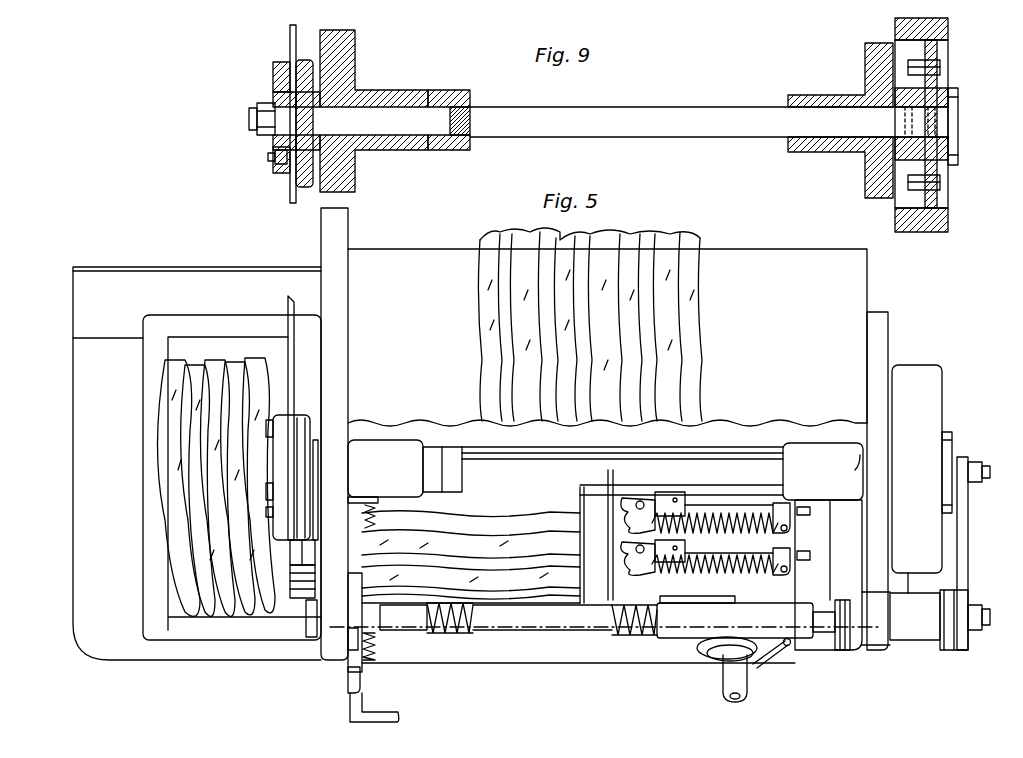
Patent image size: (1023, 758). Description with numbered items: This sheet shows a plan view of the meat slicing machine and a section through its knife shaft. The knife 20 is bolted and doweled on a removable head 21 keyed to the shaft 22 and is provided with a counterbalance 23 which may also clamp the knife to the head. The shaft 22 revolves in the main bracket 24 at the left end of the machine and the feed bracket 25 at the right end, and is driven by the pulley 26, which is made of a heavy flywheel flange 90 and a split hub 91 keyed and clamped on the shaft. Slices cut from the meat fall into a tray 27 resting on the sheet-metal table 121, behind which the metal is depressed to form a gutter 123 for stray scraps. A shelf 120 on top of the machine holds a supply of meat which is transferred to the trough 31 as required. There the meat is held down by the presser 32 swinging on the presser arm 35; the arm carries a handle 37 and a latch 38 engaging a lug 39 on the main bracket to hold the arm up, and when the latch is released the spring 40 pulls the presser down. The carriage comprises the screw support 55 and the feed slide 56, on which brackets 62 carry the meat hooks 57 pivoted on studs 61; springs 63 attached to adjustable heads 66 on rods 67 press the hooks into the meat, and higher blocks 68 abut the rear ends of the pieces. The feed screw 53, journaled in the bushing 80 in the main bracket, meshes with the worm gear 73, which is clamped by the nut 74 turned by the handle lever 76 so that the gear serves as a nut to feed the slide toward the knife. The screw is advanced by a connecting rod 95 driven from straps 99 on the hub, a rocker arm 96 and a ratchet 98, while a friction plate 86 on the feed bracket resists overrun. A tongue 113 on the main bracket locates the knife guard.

In FIG. 9, the knife 20 is at (289, 34).
In FIG. 5, the knife 20 is at (287, 302).
In FIG. 9, the removable head 21 is at (305, 58).
In FIG. 5, the removable head 21 is at (302, 413).
In FIG. 9, the shaft 22 is at (709, 106).
In FIG. 5, the shaft 22 is at (752, 457).
In FIG. 9, the counterbalance 23 is at (272, 77).
In FIG. 9, the main bracket 24 is at (356, 66).
In FIG. 5, the main bracket 24 is at (320, 243).
In FIG. 9, the feed bracket 25 is at (864, 57).
In FIG. 5, the feed bracket 25 is at (890, 325).
In FIG. 9, the pulley 26 is at (950, 52).
In FIG. 5, the pulley 26 is at (944, 398).
In FIG. 5, the tray 27 is at (176, 635).
In FIG. 5, the trough 31 is at (712, 443).
In FIG. 5, the presser 32 is at (308, 553).
In FIG. 5, the presser arm 35 is at (352, 580).
In FIG. 5, the handle 37 is at (386, 722).
In FIG. 5, the latch 38 is at (350, 680).
In FIG. 5, the lug 39 is at (348, 632).
In FIG. 5, the spring 40 is at (377, 645).
In FIG. 5, the feed screw 53 is at (452, 636).
In FIG. 5, the screw support 55 is at (688, 642).
In FIG. 5, the feed slide 56 is at (695, 588).
In FIG. 5, the meat hooks 57 is at (612, 492).
In FIG. 5, the studs 61 is at (645, 500).
In FIG. 5, the brackets 62 is at (682, 492).
In FIG. 5, the springs 63 is at (706, 570).
In FIG. 5, the heads 66 is at (792, 525).
In FIG. 5, the rods 67 is at (812, 511).
In FIG. 5, the blocks 68 is at (603, 588).
In FIG. 5, the worm gear 73 is at (712, 660).
In FIG. 5, the nut 74 is at (749, 694).
In FIG. 5, the handle lever 76 is at (778, 652).
In FIG. 5, the bushing 80 is at (312, 640).
In FIG. 5, the friction plate 86 is at (843, 652).
In FIG. 9, the flange 90 is at (950, 218).
In FIG. 9, the hub 91 is at (896, 100).
In FIG. 5, the connecting rod 95 is at (970, 530).
In FIG. 5, the rocker arm 96 is at (910, 642).
In FIG. 5, the ratchet 98 is at (958, 652).
In FIG. 9, the straps 99 is at (959, 112).
In FIG. 5, the straps 99 is at (953, 435).
In FIG. 5, the tongue 113 is at (323, 477).
In FIG. 5, the shelf 120 is at (760, 262).
In FIG. 5, the table 121 is at (88, 488).
In FIG. 5, the gutter 123 is at (88, 302).